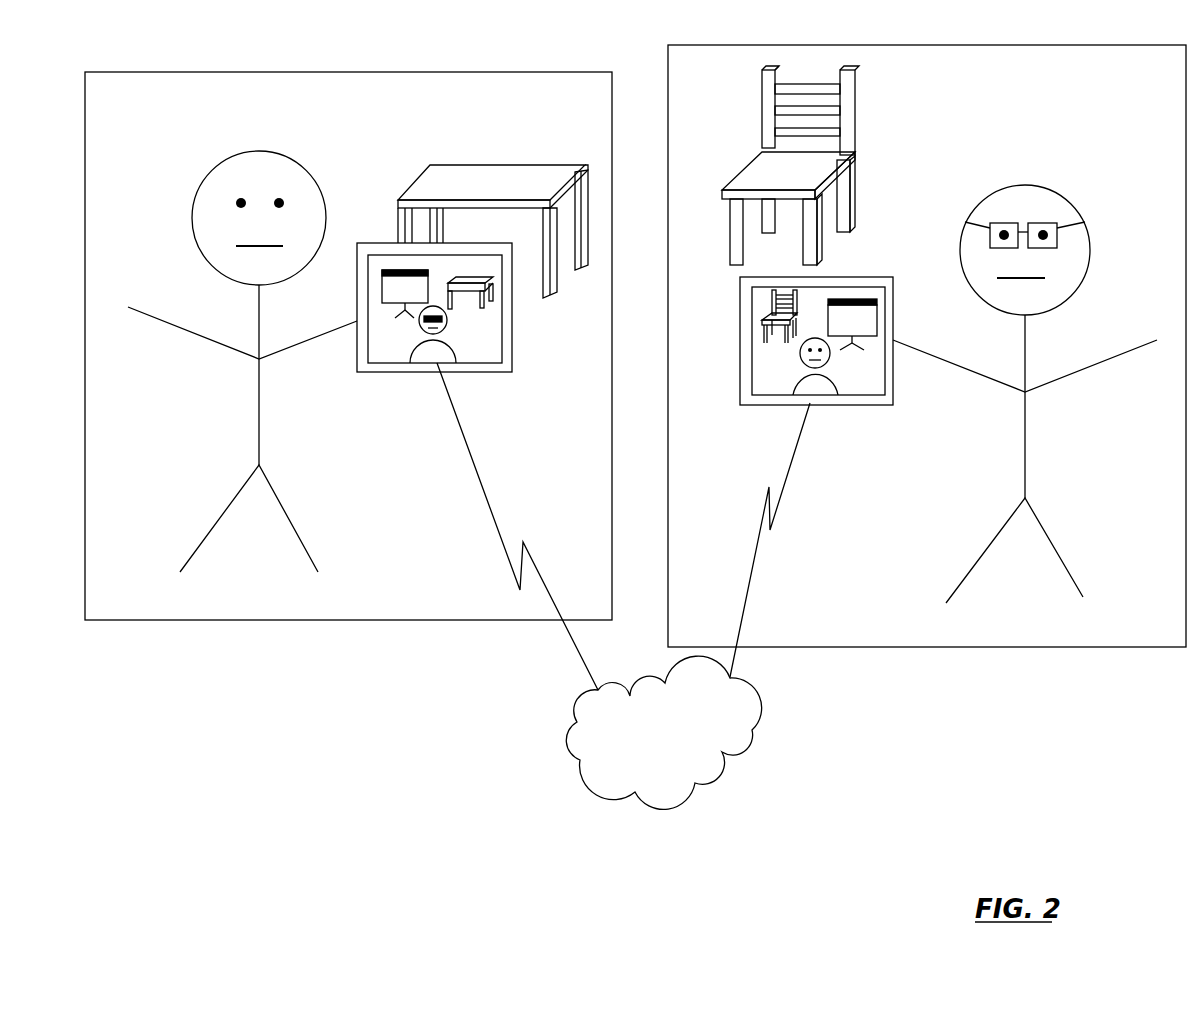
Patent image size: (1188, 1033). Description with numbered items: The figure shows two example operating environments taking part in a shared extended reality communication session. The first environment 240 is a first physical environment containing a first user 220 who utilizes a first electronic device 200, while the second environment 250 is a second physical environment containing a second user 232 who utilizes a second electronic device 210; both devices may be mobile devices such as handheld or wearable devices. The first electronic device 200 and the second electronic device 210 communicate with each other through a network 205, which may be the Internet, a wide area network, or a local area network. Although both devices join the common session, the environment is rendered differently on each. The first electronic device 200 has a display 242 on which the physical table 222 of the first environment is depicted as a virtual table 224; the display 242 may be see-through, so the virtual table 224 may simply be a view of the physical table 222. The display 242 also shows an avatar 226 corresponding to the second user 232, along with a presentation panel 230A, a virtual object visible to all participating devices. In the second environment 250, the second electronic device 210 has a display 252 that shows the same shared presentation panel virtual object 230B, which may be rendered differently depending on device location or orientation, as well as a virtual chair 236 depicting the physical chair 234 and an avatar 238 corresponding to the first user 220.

The first electronic device 200 is at (463, 373).
The network 205 is at (648, 767).
The second electronic device 210 is at (852, 405).
The first user 220 is at (215, 172).
The physical table 222 is at (435, 165).
The virtual table 224 is at (497, 292).
The avatar 226 is at (447, 321).
The presentation panel 230A is at (403, 268).
The presentation panel virtual object 230B is at (855, 298).
The second user 232 is at (1062, 198).
The physical chair 234 is at (857, 110).
The virtual chair 236 is at (772, 315).
The avatar 238 is at (838, 384).
The first environment 240 is at (345, 70).
The display 242 is at (392, 340).
The second environment 250 is at (928, 45).
The display 252 is at (775, 373).